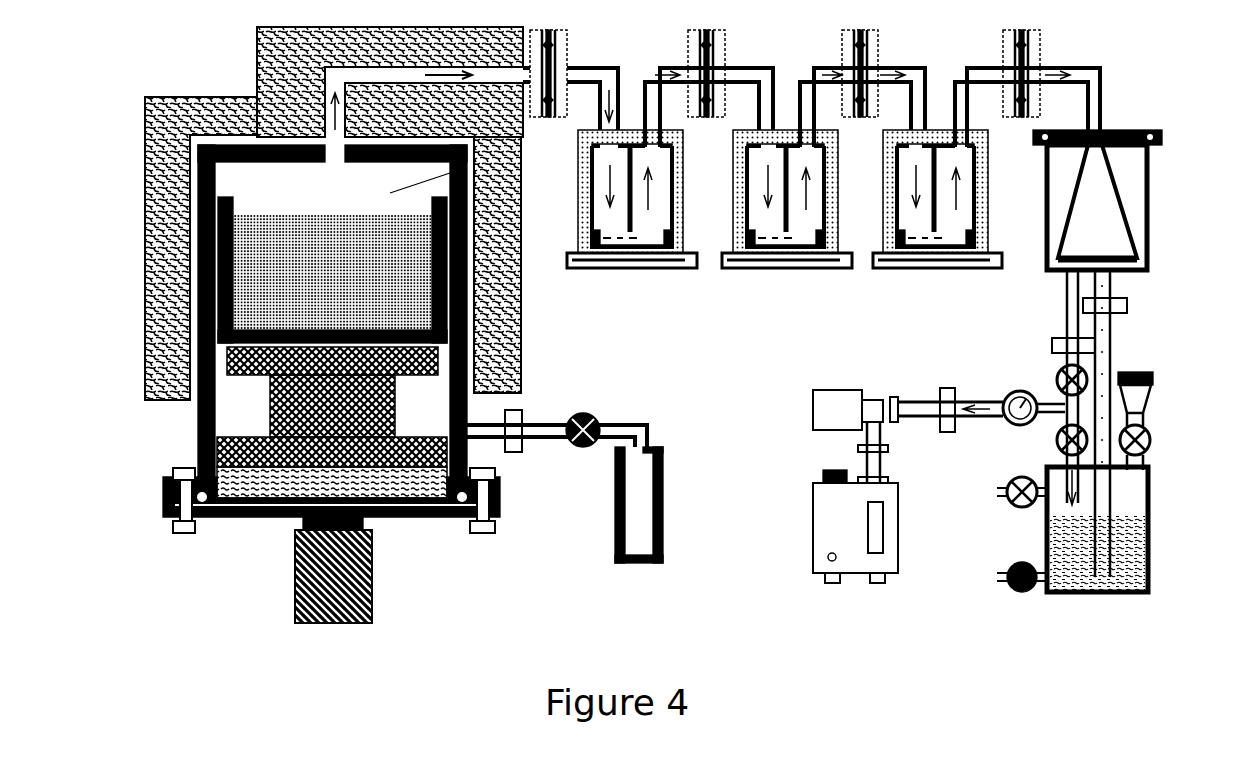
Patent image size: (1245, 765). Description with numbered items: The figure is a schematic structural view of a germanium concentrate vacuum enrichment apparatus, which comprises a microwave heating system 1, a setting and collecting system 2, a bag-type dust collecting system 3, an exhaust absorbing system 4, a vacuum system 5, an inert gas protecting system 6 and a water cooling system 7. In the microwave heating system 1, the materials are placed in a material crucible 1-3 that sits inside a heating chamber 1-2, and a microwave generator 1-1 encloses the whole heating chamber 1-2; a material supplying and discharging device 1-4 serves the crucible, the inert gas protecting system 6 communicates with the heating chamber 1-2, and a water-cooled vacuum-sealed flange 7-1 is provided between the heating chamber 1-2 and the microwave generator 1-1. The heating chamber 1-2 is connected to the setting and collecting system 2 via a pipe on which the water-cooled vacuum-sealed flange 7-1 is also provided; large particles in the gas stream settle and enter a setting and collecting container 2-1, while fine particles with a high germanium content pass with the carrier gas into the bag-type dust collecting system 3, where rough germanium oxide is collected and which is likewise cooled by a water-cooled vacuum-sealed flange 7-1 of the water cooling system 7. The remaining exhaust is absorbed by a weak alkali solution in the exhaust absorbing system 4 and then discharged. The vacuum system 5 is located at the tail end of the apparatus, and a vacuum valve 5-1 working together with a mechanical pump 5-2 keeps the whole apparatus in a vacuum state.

The microwave heating system 1 is at (213, 82).
The microwave generator 1-1 is at (146, 165).
The heating chamber 1-2 is at (568, 147).
The material crucible 1-3 is at (232, 220).
The material supplying and discharging device 1-4 is at (372, 577).
The setting and collecting system 2 is at (774, 58).
The setting and collecting container 2-1 is at (593, 270).
The bag-type dust collecting system 3 is at (1147, 220).
The exhaust absorbing system 4 is at (1163, 489).
The vacuum system 5 is at (899, 451).
The vacuum valve 5-1 is at (813, 420).
The mechanical pump 5-2 is at (813, 535).
The inert gas protecting system 6 is at (635, 421).
The water cooling system 7 is at (151, 500).
The water-cooled vacuum-sealed flange 7-1 is at (213, 522).